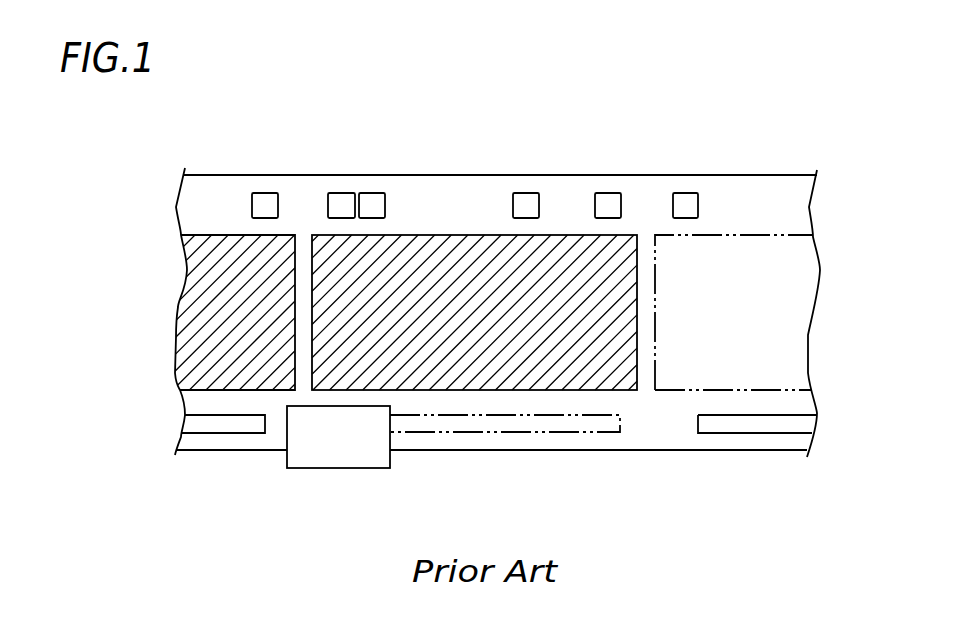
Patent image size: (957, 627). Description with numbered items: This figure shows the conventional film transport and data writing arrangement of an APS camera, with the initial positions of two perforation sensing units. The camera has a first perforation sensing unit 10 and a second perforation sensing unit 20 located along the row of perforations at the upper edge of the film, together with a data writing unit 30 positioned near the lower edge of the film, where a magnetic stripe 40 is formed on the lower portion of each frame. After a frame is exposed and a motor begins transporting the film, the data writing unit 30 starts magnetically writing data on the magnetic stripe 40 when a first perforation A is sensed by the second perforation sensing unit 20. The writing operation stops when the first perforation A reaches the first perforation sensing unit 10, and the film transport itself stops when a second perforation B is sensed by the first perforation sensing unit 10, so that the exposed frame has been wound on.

The first perforation sensing unit 10 is at (372, 199).
The second perforation sensing unit 20 is at (523, 199).
The first perforation A is at (606, 199).
The second perforation B is at (683, 199).
The data writing unit 30 is at (345, 460).
The magnetic stripe 40 is at (577, 428).